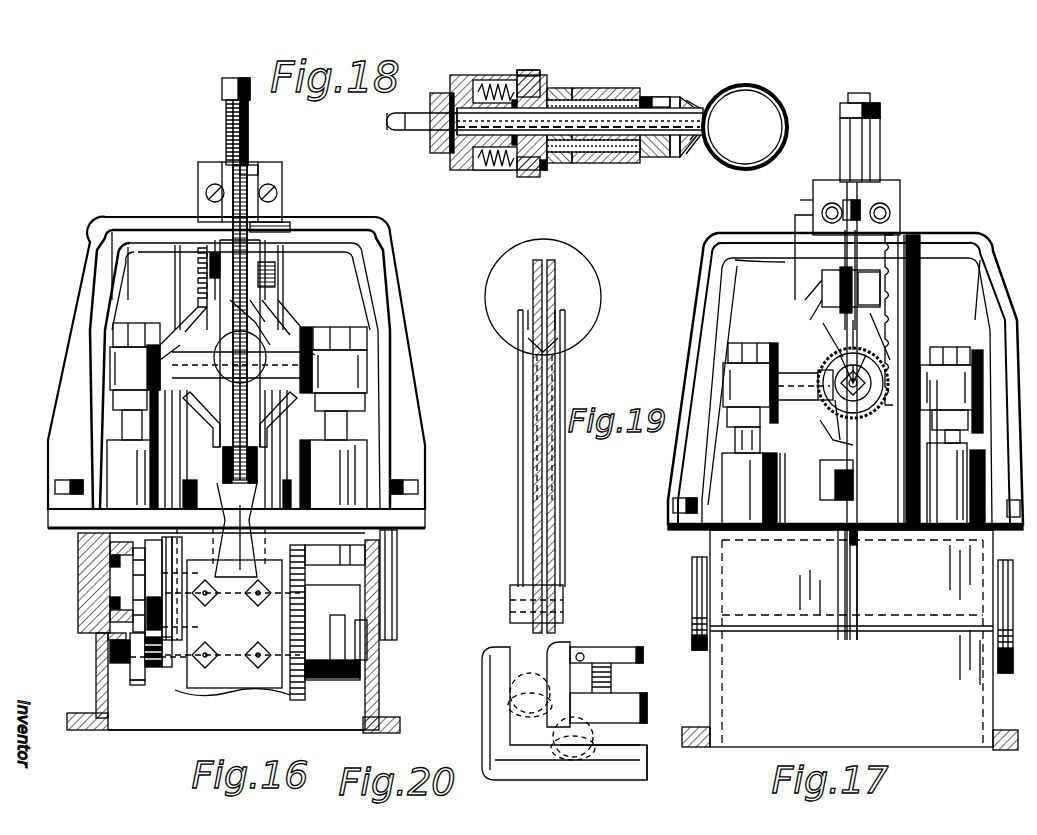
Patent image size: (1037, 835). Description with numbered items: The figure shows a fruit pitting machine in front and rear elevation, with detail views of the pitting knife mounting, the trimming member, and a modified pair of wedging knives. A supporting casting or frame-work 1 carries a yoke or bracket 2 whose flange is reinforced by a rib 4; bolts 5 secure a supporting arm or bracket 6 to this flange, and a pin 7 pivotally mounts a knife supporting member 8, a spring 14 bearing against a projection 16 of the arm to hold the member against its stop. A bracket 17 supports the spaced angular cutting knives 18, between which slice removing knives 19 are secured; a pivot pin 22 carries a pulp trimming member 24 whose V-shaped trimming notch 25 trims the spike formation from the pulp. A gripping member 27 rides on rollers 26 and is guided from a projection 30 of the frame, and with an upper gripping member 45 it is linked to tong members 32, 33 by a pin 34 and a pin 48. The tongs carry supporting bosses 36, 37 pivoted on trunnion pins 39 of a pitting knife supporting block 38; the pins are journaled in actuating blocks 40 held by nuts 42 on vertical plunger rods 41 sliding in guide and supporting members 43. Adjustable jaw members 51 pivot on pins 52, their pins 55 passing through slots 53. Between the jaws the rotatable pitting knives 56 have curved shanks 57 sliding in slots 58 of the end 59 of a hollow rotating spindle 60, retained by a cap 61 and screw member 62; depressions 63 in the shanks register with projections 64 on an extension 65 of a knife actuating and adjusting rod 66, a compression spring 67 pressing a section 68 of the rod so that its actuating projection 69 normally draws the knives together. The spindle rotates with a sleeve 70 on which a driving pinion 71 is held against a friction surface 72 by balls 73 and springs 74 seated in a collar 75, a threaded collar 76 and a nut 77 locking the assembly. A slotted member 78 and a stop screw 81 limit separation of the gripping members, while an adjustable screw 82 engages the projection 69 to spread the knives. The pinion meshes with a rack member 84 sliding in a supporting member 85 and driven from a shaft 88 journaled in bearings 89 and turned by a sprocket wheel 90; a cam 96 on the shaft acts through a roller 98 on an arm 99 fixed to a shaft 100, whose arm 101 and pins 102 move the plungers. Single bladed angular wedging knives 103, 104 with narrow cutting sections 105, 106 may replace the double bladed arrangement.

In FIG. 16, the supporting casting or frame-work 1 is at (96, 672).
In FIG. 20, the supporting casting or frame-work 1 is at (648, 705).
In FIG. 17, the supporting casting or frame-work 1 is at (720, 690).
In FIG. 16, the yoke or bracket 2 is at (62, 306).
In FIG. 17, the yoke or bracket 2 is at (698, 300).
In FIG. 17, the rib 4 is at (872, 190).
In FIG. 16, the bolts 5 is at (208, 196).
In FIG. 17, the bolts 5 is at (822, 208).
In FIG. 16, the supporting arm or bracket 6 is at (270, 176).
In FIG. 17, the supporting arm or bracket 6 is at (880, 140).
In FIG. 16, the pin 7 is at (198, 172).
In FIG. 16, the knife supporting member 8 is at (252, 160).
In FIG. 16, the spring 14 is at (226, 130).
In FIG. 16, the projection 16 is at (222, 98).
In FIG. 17, the projection 16 is at (880, 105).
In FIG. 16, the bracket 17 is at (257, 500).
In FIG. 16, the spaced angular cutting knives 18 is at (198, 210).
In FIG. 19, the spaced angular cutting knives 18 is at (535, 262).
In FIG. 19, the slice removing knives 19 is at (556, 390).
In FIG. 19, the pivot pin 22 is at (510, 604).
In FIG. 16, the pulp trimming member 24 is at (265, 252).
In FIG. 19, the pulp trimming member 24 is at (518, 440).
In FIG. 19, the V-shaped trimming notch 25 is at (565, 340).
In FIG. 17, the rollers 26 is at (838, 562).
In FIG. 17, the gripping member 27 is at (865, 545).
In FIG. 17, the projection 30 is at (920, 500).
In FIG. 16, the tong member 32 is at (270, 318).
In FIG. 16, the tong member 33 is at (213, 528).
In FIG. 16, the pin 34 is at (122, 425).
In FIG. 16, the supporting boss 36 is at (312, 327).
In FIG. 17, the supporting boss 36 is at (728, 352).
In FIG. 16, the supporting boss 37 is at (178, 318).
In FIG. 17, the supporting boss 37 is at (935, 290).
In FIG. 16, the pitting knife supporting block 38 is at (276, 272).
In FIG. 18, the pitting knife supporting block 38 is at (608, 88).
In FIG. 16, the trunnion members or pins 39 is at (150, 372).
In FIG. 17, the trunnion members or pins 39 is at (768, 389).
In FIG. 16, the actuating blocks 40 is at (113, 335).
In FIG. 16, the vertical plunger rods 41 is at (113, 400).
In FIG. 17, the vertical plunger rods 41 is at (727, 425).
In FIG. 16, the adjusting and securing nuts 42 is at (105, 300).
In FIG. 17, the adjusting and securing nuts 42 is at (890, 305).
In FIG. 16, the vertical guide and supporting members 43 is at (107, 465).
In FIG. 17, the vertical guide and supporting members 43 is at (700, 540).
In FIG. 17, the gripping member 45 is at (822, 290).
In FIG. 17, the pin 48 is at (813, 235).
In FIG. 17, the adjustable jaw members 51 is at (820, 485).
In FIG. 17, the pins 52 is at (830, 440).
In FIG. 16, the slots or recesses 53 is at (198, 258).
In FIG. 17, the pins 55 is at (920, 240).
In FIG. 18, the rotatable pitting knives 56 is at (775, 98).
In FIG. 18, the curved supporting shanks 57 is at (692, 100).
In FIG. 18, the slots 58 is at (675, 97).
In FIG. 18, the end of spindle 59 is at (645, 157).
In FIG. 18, the hollow rotating spindle 60 is at (580, 88).
In FIG. 18, the cap 61 is at (660, 97).
In FIG. 18, the screw member 62 is at (646, 97).
In FIG. 18, the depressions 63 is at (690, 112).
In FIG. 18, the projections 64 is at (704, 121).
In FIG. 18, the extension 65 is at (670, 155).
In FIG. 18, the knife actuating and adjusting rod 66 is at (545, 170).
In FIG. 18, the compression spring 67 is at (558, 88).
In FIG. 18, the section of rod 68 is at (420, 113).
In FIG. 18, the actuating projection 69 is at (392, 113).
In FIG. 18, the sleeve 70 is at (598, 163).
In FIG. 18, the driving pinion 71 is at (527, 70).
In FIG. 17, the driving pinion 71 is at (840, 320).
In FIG. 18, the friction surface 72 is at (538, 70).
In FIG. 18, the balls 73 is at (514, 170).
In FIG. 18, the springs 74 is at (462, 75).
In FIG. 18, the collar 75 is at (495, 80).
In FIG. 18, the collar 76 is at (448, 153).
In FIG. 18, the nut 77 is at (430, 145).
In FIG. 17, the member 78 is at (740, 262).
In FIG. 17, the limit or stop screw 81 is at (820, 190).
In FIG. 17, the adjustable screw 82 is at (830, 360).
In FIG. 16, the rack member 84 is at (128, 262).
In FIG. 17, the rack member 84 is at (905, 262).
In FIG. 16, the supporting member 85 is at (160, 240).
In FIG. 17, the supporting member 85 is at (915, 236).
In FIG. 16, the shaft 88 is at (78, 607).
In FIG. 16, the bearings 89 is at (78, 580).
In FIG. 17, the bearings 89 is at (692, 587).
In FIG. 16, the sprocket wheel 90 is at (305, 685).
In FIG. 16, the cam 96 is at (96, 652).
In FIG. 16, the roller 98 is at (145, 685).
In FIG. 16, the arm 99 is at (124, 683).
In FIG. 16, the shaft 100 is at (190, 692).
In FIG. 16, the arm 101 is at (365, 725).
In FIG. 16, the pins 102 is at (96, 662).
In FIG. 20, the single bladed angular wedging knife 103 is at (645, 693).
In FIG. 20, the single bladed angular wedging knife 104 is at (635, 778).
In FIG. 20, the narrow cutting section 105 is at (565, 645).
In FIG. 20, the narrow cutting section 106 is at (490, 665).